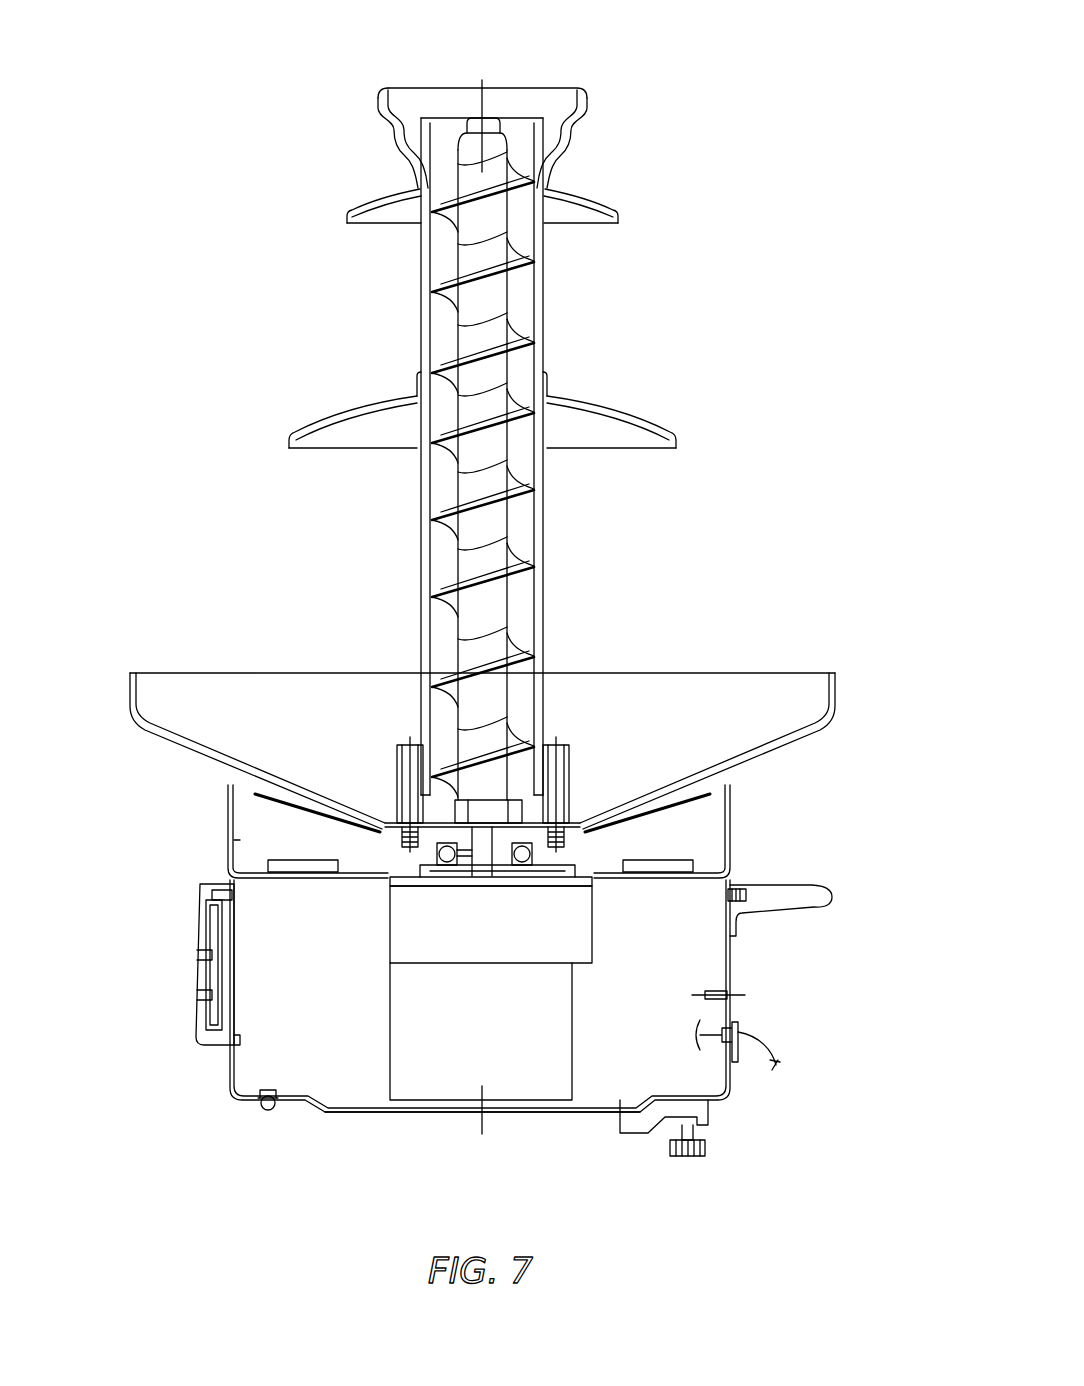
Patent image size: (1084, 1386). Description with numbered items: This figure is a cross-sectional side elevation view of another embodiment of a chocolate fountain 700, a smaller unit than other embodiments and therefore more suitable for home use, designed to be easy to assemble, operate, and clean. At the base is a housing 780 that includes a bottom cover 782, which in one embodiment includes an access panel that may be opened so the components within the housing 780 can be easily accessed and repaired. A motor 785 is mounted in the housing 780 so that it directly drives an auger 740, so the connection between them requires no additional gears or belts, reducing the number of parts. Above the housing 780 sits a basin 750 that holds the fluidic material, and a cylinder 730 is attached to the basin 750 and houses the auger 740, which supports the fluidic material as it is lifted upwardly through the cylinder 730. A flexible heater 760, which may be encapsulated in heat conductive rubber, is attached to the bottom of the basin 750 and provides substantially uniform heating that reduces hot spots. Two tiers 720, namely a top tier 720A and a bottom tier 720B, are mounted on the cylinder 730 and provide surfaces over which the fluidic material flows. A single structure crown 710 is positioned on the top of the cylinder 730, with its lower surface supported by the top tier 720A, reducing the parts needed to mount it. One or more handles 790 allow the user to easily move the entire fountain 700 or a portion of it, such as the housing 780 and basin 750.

The chocolate fountain 700 is at (745, 106).
The crown 710 is at (416, 153).
The tier 720 is at (618, 219).
The top tier 720A is at (395, 207).
The bottom tier 720B is at (376, 421).
The cylinder 730 is at (421, 322).
The auger 740 is at (457, 580).
The basin 750 is at (135, 692).
The flexible heater 760 is at (295, 812).
The housing 780 is at (272, 1048).
The bottom cover 782 is at (425, 1113).
The motor 785 is at (560, 946).
The handle 790 is at (835, 898).